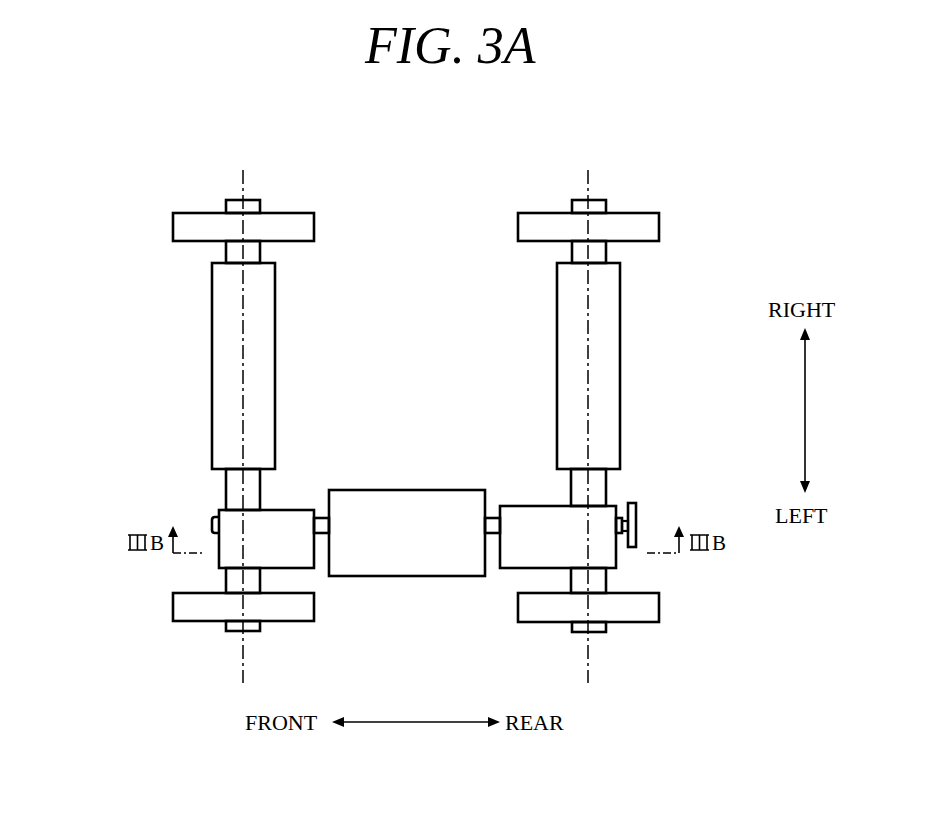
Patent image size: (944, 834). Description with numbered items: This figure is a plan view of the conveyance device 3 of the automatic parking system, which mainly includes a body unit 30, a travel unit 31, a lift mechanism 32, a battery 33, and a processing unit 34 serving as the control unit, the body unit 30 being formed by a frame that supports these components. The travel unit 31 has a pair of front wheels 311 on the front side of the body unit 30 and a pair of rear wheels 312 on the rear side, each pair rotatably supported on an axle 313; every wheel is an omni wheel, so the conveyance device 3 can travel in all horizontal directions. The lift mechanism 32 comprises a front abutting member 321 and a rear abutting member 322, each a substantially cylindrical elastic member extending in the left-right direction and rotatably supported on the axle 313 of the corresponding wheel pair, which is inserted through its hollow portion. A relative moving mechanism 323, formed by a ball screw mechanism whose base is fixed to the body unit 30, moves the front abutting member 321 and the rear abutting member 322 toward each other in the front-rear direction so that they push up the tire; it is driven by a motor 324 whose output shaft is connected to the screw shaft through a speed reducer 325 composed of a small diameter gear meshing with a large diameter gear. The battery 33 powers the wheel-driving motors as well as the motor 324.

The conveyance device 3 is at (688, 174).
The body unit 30 is at (108, 136).
The travel unit 31 is at (128, 240).
The lift mechanism 32 is at (128, 373).
The battery 33 is at (418, 557).
The processing unit 34 is at (282, 515).
The front wheels 311 is at (200, 222).
The rear wheels 312 is at (550, 222).
The axle 313 is at (252, 200).
The front abutting member 321 is at (215, 322).
The rear abutting member 322 is at (562, 323).
The relative moving mechanism 323 is at (320, 502).
The motor 324 is at (528, 506).
The speed reducer 325 is at (640, 510).